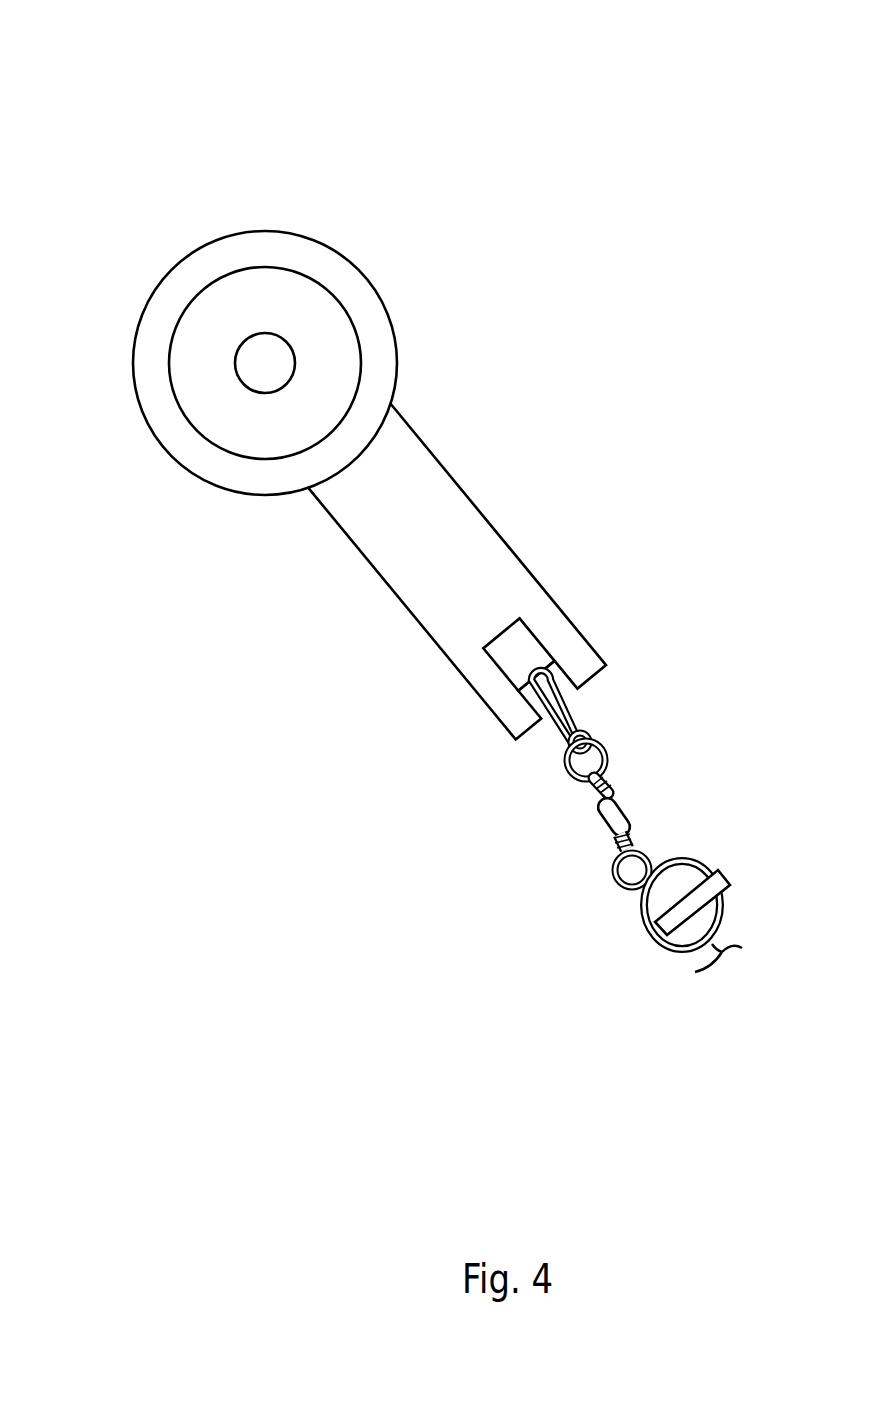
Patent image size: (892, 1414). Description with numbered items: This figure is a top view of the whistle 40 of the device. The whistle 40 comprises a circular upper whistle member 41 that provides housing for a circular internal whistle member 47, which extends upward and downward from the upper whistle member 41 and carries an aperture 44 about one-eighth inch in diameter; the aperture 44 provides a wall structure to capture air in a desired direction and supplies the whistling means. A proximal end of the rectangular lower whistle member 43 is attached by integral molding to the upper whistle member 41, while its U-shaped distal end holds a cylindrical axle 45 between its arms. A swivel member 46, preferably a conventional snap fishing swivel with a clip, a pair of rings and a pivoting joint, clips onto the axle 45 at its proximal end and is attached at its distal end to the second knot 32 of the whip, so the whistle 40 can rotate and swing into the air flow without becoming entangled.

The whistle 40 is at (146, 108).
The upper whistle member 41 is at (273, 258).
The internal whistle member 47 is at (228, 335).
The aperture 44 is at (268, 362).
The lower whistle member 43 is at (440, 508).
The axle 45 is at (555, 673).
The swivel member 46 is at (630, 828).
The second knot 32 is at (697, 878).